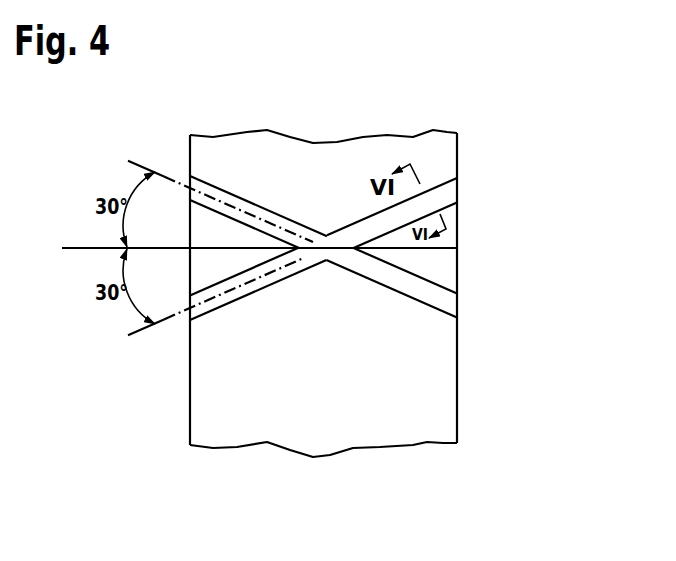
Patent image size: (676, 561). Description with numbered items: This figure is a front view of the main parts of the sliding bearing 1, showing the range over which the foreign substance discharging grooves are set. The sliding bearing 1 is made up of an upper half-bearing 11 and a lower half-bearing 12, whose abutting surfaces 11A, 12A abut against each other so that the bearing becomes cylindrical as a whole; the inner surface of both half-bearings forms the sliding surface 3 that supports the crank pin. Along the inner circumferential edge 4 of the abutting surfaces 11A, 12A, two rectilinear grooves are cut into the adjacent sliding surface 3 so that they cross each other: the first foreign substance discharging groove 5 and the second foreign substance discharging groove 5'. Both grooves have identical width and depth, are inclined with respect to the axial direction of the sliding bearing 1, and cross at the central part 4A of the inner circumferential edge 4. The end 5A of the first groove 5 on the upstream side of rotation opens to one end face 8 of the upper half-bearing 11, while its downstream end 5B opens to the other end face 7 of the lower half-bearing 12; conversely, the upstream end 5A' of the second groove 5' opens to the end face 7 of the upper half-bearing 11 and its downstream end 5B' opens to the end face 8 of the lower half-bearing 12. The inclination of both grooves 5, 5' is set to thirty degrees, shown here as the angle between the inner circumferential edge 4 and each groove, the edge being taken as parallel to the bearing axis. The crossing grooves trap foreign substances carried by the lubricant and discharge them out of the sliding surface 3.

The sliding bearing 1 is at (374, 288).
The sliding surface 3 is at (332, 432).
The inner circumferential edge 4 is at (224, 249).
The central part 4A is at (327, 243).
The first foreign substance discharging groove 5 is at (318, 236).
The second foreign substance discharging groove 5' is at (327, 253).
The end of the first foreign substance discharging groove 5A is at (180, 215).
The end of the second foreign substance discharging groove 5A' is at (492, 158).
The end of the first foreign substance discharging groove 5B is at (490, 329).
The end of the second foreign substance discharging groove 5B' is at (164, 344).
The end face 7 is at (457, 219).
The end face 8 is at (188, 165).
The upper half-bearing 11 is at (410, 138).
The abutting surface 11A is at (457, 268).
The lower half-bearing 12 is at (423, 431).
The abutting surface 12A is at (457, 235).